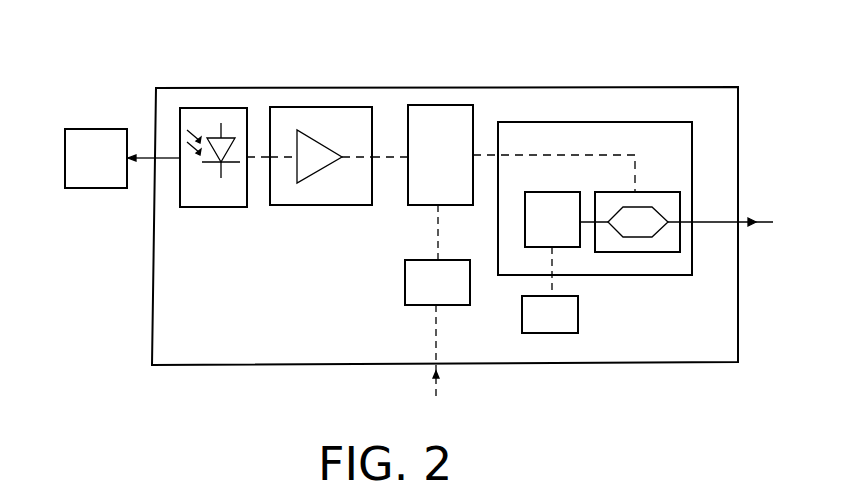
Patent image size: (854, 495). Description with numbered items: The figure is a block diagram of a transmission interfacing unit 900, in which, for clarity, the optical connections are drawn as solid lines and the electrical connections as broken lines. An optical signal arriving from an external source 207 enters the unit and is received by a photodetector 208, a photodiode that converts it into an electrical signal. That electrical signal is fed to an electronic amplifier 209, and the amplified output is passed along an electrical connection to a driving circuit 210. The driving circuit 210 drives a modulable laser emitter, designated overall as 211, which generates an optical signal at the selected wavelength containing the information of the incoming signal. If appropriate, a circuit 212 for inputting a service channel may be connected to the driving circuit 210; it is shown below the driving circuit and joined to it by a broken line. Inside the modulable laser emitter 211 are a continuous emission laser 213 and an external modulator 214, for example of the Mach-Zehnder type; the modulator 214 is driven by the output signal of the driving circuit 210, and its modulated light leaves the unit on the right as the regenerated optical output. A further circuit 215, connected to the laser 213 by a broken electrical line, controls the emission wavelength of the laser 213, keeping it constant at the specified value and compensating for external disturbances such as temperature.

The transmission interfacing unit 900 is at (263, 90).
The external source 207 is at (90, 182).
The photodetector 208 is at (202, 202).
The electronic amplifier 209 is at (300, 203).
The driving circuit 210 is at (442, 110).
The modulable laser emitter 211 is at (648, 127).
The service channel input circuit 212 is at (408, 287).
The continuous emission laser 213 is at (535, 223).
The external modulator 214 is at (673, 202).
The wavelength control circuit 215 is at (572, 323).